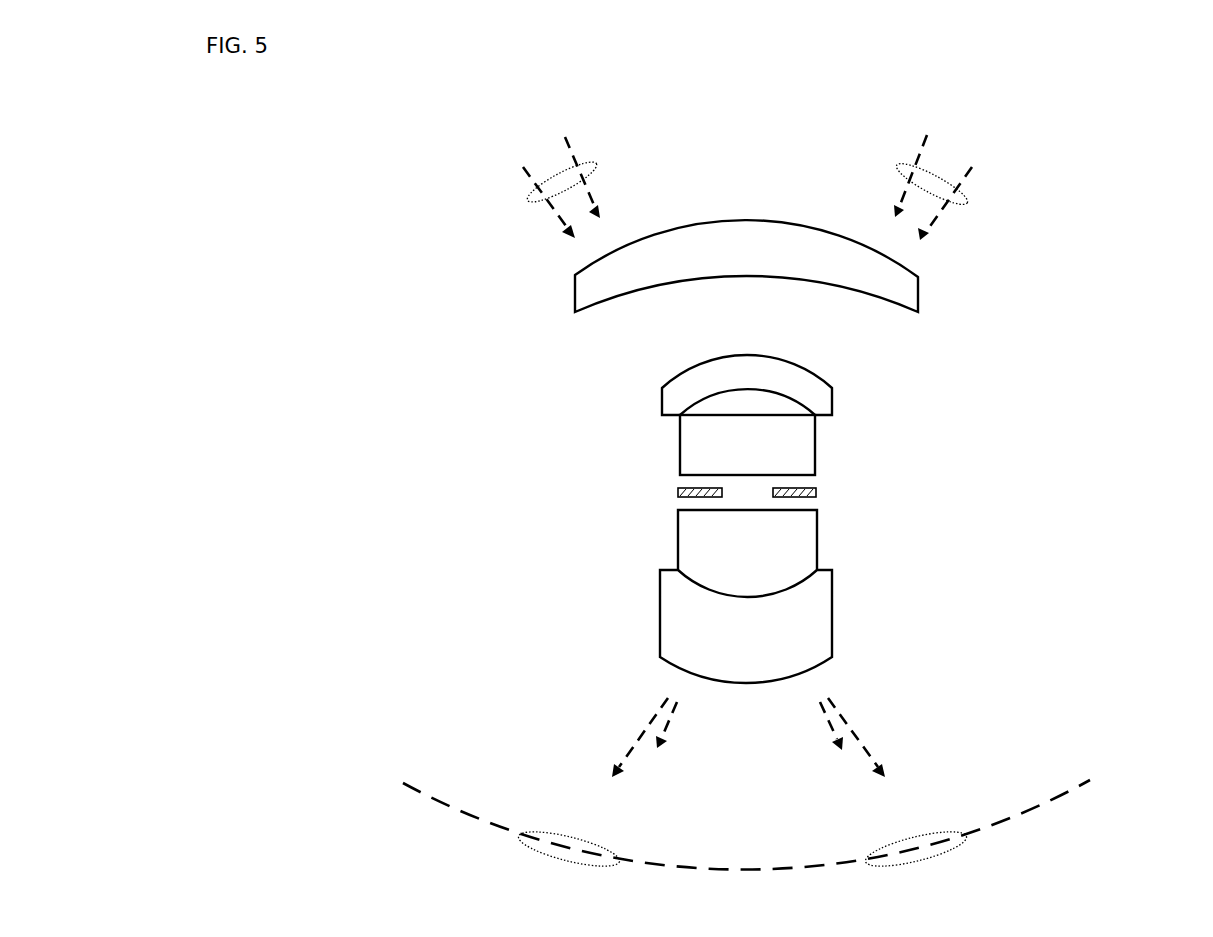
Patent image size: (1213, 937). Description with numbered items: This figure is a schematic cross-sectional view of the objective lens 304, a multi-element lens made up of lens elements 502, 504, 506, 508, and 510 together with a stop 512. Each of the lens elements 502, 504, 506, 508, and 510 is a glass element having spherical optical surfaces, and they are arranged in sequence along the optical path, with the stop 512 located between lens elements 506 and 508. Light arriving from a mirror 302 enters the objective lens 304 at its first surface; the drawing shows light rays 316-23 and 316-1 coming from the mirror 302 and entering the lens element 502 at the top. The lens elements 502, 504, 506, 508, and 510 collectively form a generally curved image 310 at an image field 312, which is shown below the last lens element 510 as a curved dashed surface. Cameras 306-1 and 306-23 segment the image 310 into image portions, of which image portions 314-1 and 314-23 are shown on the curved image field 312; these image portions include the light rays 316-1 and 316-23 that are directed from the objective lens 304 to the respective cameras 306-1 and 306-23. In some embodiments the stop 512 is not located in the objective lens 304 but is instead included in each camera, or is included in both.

The objective lens 304 is at (323, 183).
The mirror 302 is at (747, 172).
The light rays 316-23 is at (532, 200).
The light rays 316-1 is at (969, 201).
The lens element 502 is at (585, 285).
The lens element 504 is at (671, 391).
The lens element 506 is at (731, 451).
The stop 512 is at (818, 492).
The lens element 508 is at (731, 554).
The lens element 510 is at (731, 641).
The camera 306-1 is at (609, 755).
The camera 306-23 is at (900, 755).
The image 310 is at (789, 825).
The image field 312 is at (1090, 781).
The image portion 314-1 is at (548, 857).
The image portion 314-23 is at (935, 858).